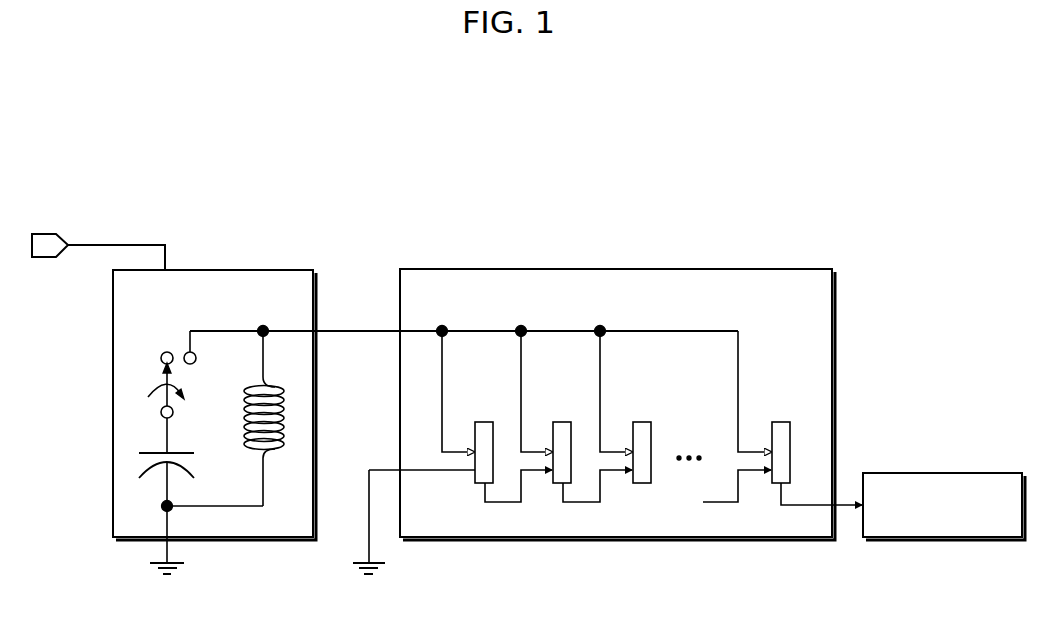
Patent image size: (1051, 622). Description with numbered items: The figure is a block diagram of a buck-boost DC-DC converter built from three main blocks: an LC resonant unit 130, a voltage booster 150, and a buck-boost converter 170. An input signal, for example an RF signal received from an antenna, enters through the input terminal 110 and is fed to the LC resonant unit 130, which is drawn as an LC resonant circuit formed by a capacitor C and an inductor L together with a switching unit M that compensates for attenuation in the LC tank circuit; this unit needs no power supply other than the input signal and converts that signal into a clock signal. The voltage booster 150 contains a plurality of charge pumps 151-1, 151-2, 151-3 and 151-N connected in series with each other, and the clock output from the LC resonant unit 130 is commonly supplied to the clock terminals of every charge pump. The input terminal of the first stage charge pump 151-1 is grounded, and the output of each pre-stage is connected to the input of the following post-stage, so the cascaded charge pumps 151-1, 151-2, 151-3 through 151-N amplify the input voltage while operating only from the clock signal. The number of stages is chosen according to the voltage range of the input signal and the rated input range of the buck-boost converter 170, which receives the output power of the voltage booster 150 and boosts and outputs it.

The input terminal 110 is at (50, 234).
The LC resonant unit 130 is at (237, 270).
The voltage booster 150 is at (636, 269).
The charge pump 151-1 is at (483, 422).
The charge pump 151-2 is at (561, 422).
The charge pump 151-3 is at (641, 422).
The charge pump 151-N is at (780, 422).
The buck-boost converter 170 is at (955, 473).
The switching unit M is at (175, 385).
The capacitor C is at (177, 462).
The inductor L is at (264, 418).